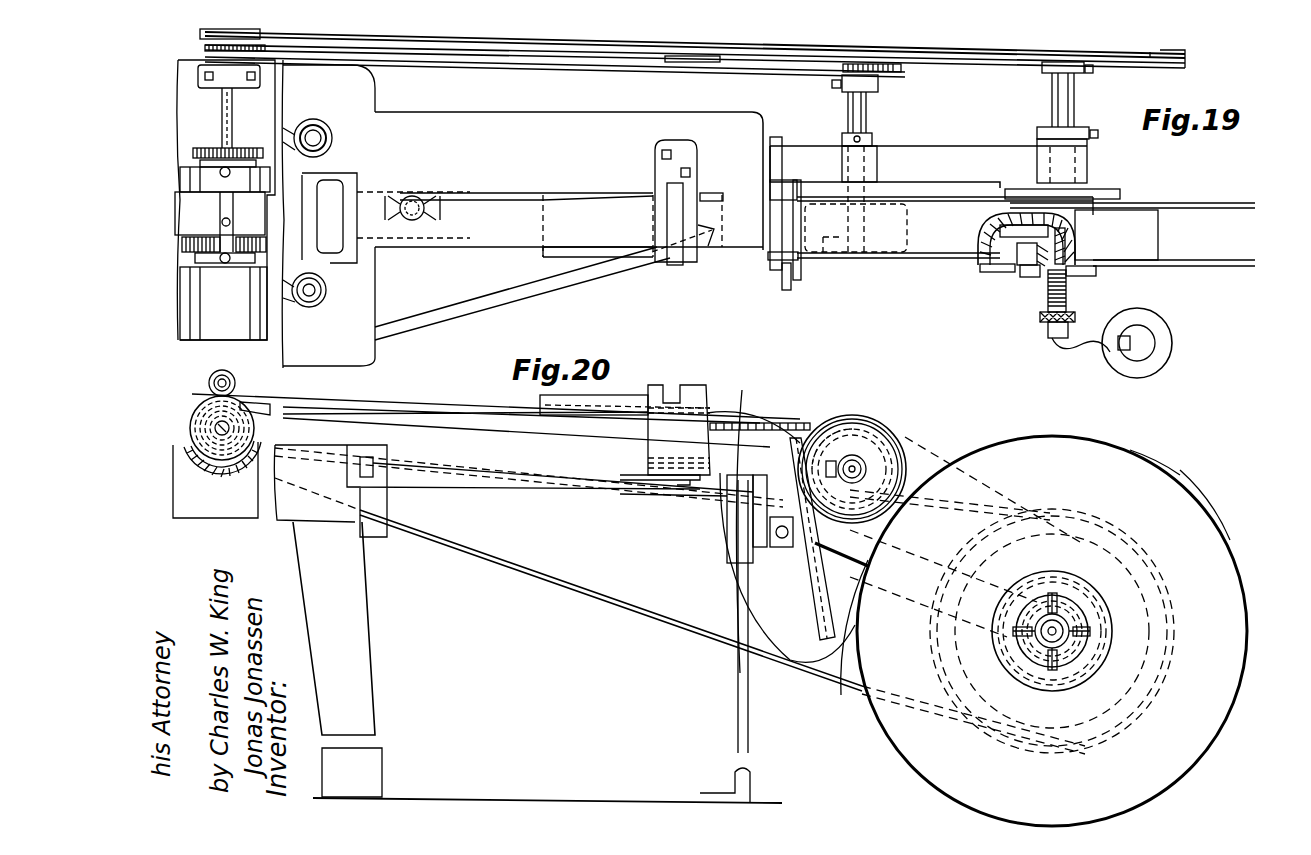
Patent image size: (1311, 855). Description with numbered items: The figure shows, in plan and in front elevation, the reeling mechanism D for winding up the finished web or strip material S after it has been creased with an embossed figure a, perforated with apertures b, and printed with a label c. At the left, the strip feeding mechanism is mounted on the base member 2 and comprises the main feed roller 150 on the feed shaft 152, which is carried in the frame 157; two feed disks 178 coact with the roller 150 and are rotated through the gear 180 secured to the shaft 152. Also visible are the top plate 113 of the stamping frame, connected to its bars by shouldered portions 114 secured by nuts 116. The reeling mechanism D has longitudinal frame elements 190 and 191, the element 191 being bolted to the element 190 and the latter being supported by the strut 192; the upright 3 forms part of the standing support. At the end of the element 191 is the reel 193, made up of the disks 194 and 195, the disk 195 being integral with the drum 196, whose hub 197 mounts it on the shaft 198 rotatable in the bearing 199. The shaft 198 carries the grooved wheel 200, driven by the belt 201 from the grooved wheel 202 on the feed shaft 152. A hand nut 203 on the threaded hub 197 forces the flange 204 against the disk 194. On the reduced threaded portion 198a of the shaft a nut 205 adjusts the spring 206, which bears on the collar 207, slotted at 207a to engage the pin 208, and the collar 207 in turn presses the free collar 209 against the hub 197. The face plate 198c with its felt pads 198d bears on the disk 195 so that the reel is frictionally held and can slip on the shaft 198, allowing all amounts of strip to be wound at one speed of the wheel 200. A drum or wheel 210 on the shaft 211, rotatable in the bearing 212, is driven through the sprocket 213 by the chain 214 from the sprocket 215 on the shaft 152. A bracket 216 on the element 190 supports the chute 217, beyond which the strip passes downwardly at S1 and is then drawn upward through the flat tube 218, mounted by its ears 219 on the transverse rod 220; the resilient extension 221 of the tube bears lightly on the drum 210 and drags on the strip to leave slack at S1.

In FIG. 19, the base member 2 is at (476, 214).
In FIG. 20, the base member 2 is at (487, 491).
In FIG. 20, the standard leg 3 is at (537, 662).
In FIG. 19, the top plate 113 is at (322, 146).
In FIG. 19, the shouldered portions 114 is at (326, 132).
In FIG. 19, the nuts 116 is at (312, 122).
In FIG. 19, the main feed roller 150 is at (222, 215).
In FIG. 20, the main feed roller 150 is at (254, 432).
In FIG. 19, the shaft 152 is at (232, 120).
In FIG. 20, the shaft 152 is at (215, 445).
In FIG. 19, the frame 157 is at (195, 312).
In FIG. 19, the feed disks 178 is at (234, 232).
In FIG. 20, the feed disks 178 is at (236, 386).
In FIG. 19, the gear 180 is at (250, 143).
In FIG. 19, the longitudinal frame element 190 is at (600, 108).
In FIG. 20, the longitudinal frame element 190 is at (620, 488).
In FIG. 19, the longitudinal frame element 191 is at (970, 152).
In FIG. 20, the longitudinal frame element 191 is at (842, 695).
In FIG. 20, the strut 192 is at (738, 680).
In FIG. 19, the reel 193 is at (1165, 238).
In FIG. 20, the reel 193 is at (1195, 515).
In FIG. 19, the disk 194 is at (960, 265).
In FIG. 20, the disk 194 is at (1163, 478).
In FIG. 19, the disk 195 is at (1220, 207).
In FIG. 19, the drum 196 is at (985, 215).
In FIG. 19, the hub 197 is at (1065, 242).
In FIG. 19, the shaft 198 is at (1052, 97).
In FIG. 19, the reduced screw threaded portion 198a is at (1052, 340).
In FIG. 20, the reduced screw threaded portion 198a is at (1090, 628).
In FIG. 19, the face plate 198c is at (1110, 193).
In FIG. 19, the felt pads 198d is at (1138, 203).
In FIG. 19, the bearing 199 is at (1087, 166).
In FIG. 19, the grooved wheel 200 is at (1185, 60).
In FIG. 20, the grooved wheel 200 is at (1108, 525).
In FIG. 19, the belt 201 is at (726, 50).
In FIG. 20, the belt 201 is at (535, 585).
In FIG. 19, the grooved wheel 202 is at (255, 34).
In FIG. 20, the grooved wheel 202 is at (178, 408).
In FIG. 19, the hand nut 203 is at (1018, 268).
In FIG. 20, the hand nut 203 is at (1090, 637).
In FIG. 19, the flange 204 is at (1000, 270).
In FIG. 20, the flange 204 is at (1065, 690).
In FIG. 19, the nut 205 is at (1043, 318).
In FIG. 19, the spring 206 is at (1070, 298).
In FIG. 19, the collar 207 is at (1080, 280).
In FIG. 19, the slot 207a is at (1135, 350).
In FIG. 19, the pin 208 is at (1043, 274).
In FIG. 19, the free collar 209 is at (1072, 252).
In FIG. 20, the drum or wheel 210 is at (880, 448).
In FIG. 20, the shaft 211 is at (866, 469).
In FIG. 19, the bearing 212 is at (868, 165).
In FIG. 20, the bearing 212 is at (890, 482).
In FIG. 19, the sprocket 213 is at (875, 80).
In FIG. 20, the sprocket 213 is at (818, 428).
In FIG. 19, the chain 214 is at (748, 66).
In FIG. 20, the chain 214 is at (744, 425).
In FIG. 19, the sprocket 215 is at (208, 75).
In FIG. 20, the sprocket 215 is at (205, 440).
In FIG. 19, the bracket 216 is at (697, 188).
In FIG. 20, the bracket 216 is at (665, 435).
In FIG. 19, the guide member or chute 217 is at (602, 194).
In FIG. 20, the guide member or chute 217 is at (612, 410).
In FIG. 20, the flat tube 218 is at (815, 606).
In FIG. 19, the ears 219 is at (770, 262).
In FIG. 20, the ears 219 is at (780, 548).
In FIG. 19, the rod 220 is at (786, 284).
In FIG. 20, the rod 220 is at (815, 548).
In FIG. 19, the resilient extension 221 is at (805, 238).
In FIG. 20, the resilient extension 221 is at (742, 468).
In FIG. 19, the web or strip material S is at (495, 244).
In FIG. 20, the web or strip material S is at (465, 404).
In FIG. 20, the slack point of strip S1 is at (767, 660).
In FIG. 19, the embossed or creased figure a is at (412, 195).
In FIG. 19, the apertures b is at (432, 200).
In FIG. 19, the printed label c is at (400, 238).
In FIG. 20, the reeling mechanism D is at (1052, 618).